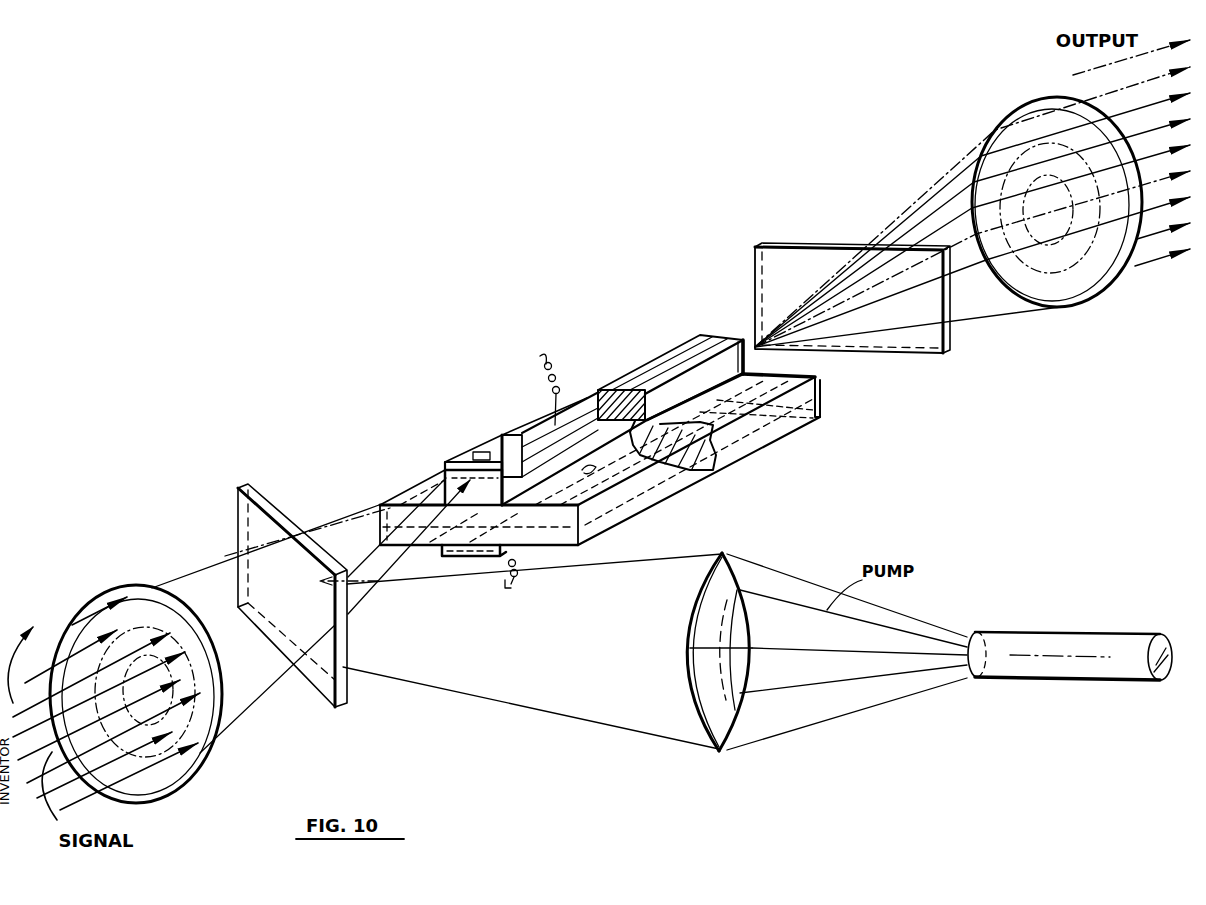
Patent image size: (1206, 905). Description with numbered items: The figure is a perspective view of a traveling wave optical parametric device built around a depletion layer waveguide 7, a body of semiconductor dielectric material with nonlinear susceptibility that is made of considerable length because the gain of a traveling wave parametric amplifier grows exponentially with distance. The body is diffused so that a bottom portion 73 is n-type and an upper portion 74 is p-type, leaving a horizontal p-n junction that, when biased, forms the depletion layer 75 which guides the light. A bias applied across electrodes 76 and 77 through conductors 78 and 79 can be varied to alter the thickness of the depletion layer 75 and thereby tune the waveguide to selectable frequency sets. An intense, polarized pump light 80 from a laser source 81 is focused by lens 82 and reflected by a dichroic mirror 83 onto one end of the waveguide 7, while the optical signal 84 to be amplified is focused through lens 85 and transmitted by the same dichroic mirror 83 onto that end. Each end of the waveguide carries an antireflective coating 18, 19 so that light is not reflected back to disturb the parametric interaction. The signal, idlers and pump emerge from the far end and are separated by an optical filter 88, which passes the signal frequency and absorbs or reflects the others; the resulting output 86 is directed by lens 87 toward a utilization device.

The depletion layer waveguide 7 is at (571, 386).
The antireflective coating 18 is at (617, 505).
The antireflective coating 19 is at (822, 394).
The bottom portion 73 is at (763, 427).
The upper portion 74 is at (715, 380).
The depletion layer 75 is at (586, 478).
The electrode 76 is at (502, 442).
The electrode 77 is at (462, 560).
The conductor 78 is at (550, 384).
The conductor 79 is at (514, 577).
The pump light 80 is at (793, 690).
The light source 81 is at (1090, 648).
The lens 82 is at (747, 573).
The dichroic mirror 83 is at (347, 647).
The optical signal 84 is at (104, 703).
The lens 85 is at (181, 601).
The output 86 is at (1147, 238).
The lens 87 is at (1077, 253).
The optical filter 88 is at (945, 339).